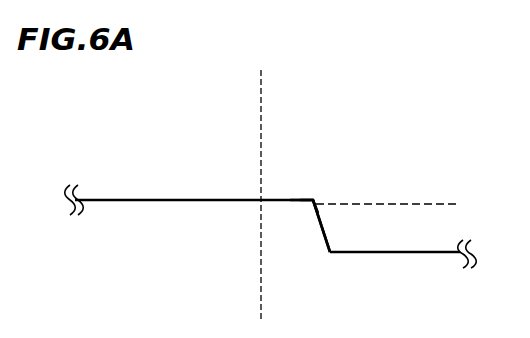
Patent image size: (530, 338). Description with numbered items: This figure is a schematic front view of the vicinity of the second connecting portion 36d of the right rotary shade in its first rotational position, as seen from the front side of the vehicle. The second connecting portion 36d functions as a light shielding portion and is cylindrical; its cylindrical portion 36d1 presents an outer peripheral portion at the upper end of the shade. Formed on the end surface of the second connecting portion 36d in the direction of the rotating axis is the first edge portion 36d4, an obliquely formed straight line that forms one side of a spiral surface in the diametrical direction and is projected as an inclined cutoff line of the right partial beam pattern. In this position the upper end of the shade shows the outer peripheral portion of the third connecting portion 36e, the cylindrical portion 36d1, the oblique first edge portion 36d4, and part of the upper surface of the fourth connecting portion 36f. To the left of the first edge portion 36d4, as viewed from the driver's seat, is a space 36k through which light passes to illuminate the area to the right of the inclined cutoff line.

The third connecting portion 36e is at (168, 200).
The second connecting portion 36d is at (295, 212).
The cylindrical portion 36d1 is at (298, 197).
The first edge portion 36d4 is at (323, 225).
The space 36k is at (378, 238).
The fourth connecting portion 36f is at (425, 252).